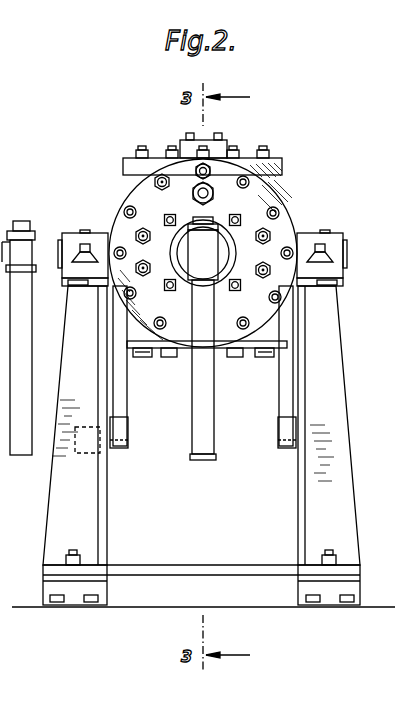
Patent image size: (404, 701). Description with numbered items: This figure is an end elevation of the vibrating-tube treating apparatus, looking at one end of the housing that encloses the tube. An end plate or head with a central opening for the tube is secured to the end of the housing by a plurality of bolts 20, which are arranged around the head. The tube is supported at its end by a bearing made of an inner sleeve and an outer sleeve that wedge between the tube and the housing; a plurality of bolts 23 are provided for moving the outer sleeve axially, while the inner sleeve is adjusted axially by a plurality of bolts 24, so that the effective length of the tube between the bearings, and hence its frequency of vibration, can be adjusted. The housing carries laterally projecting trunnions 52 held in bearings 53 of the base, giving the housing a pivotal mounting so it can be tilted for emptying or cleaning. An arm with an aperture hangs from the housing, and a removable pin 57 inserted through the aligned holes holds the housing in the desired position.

The bolts 20 is at (207, 167).
The bolts 23 is at (215, 193).
The bolts 24 is at (166, 217).
The trunnions 52 is at (65, 234).
The bearings 53 is at (333, 234).
The pin 57 is at (90, 452).